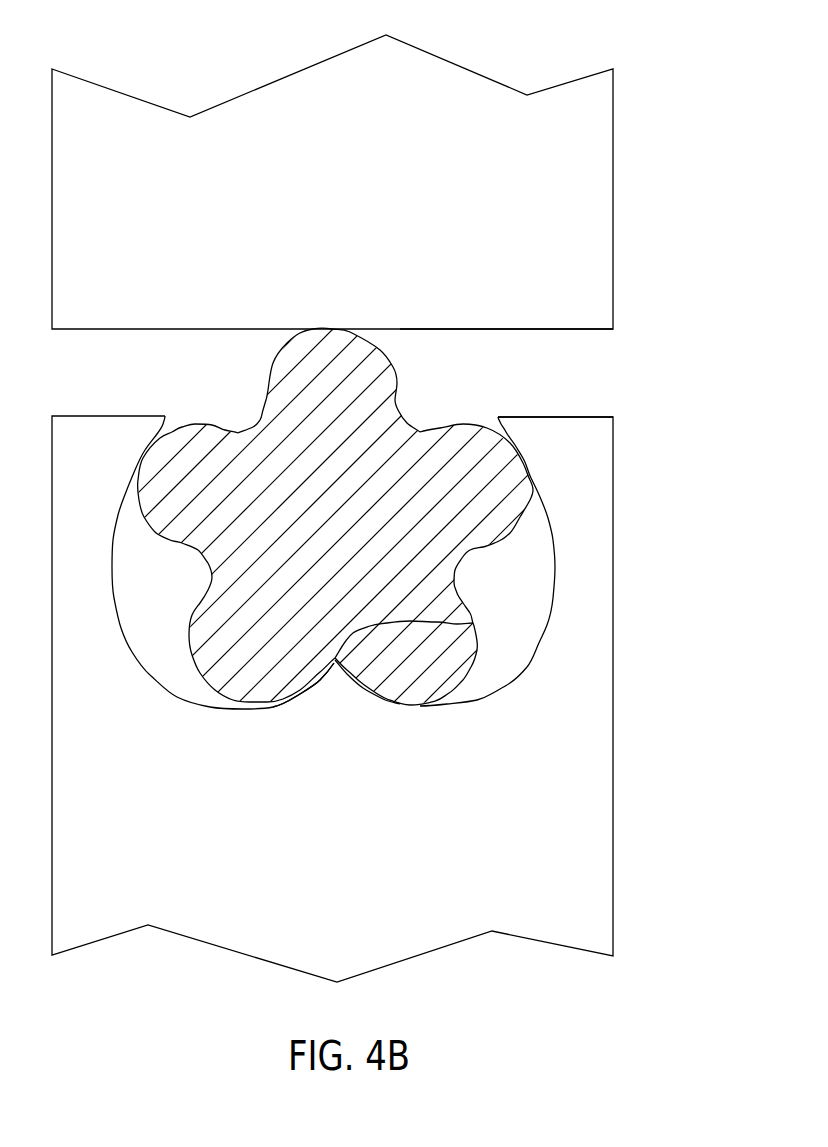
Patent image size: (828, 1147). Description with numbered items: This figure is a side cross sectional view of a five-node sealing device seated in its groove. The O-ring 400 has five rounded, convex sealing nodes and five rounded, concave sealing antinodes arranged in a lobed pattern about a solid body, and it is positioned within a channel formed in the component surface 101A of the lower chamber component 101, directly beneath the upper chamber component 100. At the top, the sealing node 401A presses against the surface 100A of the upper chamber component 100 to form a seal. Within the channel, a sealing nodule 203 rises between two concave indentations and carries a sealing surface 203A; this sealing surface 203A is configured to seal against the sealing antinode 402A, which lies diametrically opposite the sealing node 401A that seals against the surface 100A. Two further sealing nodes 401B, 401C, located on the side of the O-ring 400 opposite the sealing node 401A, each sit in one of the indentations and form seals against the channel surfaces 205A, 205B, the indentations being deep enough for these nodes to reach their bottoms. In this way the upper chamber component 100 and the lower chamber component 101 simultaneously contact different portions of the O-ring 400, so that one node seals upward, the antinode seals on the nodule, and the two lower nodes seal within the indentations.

The upper chamber component 100 is at (270, 182).
The surface of the upper chamber component 100A is at (565, 329).
The lower chamber component 101 is at (347, 899).
The component surface 101A is at (563, 417).
The sealing nodule 203 is at (337, 684).
The sealing surface 203A is at (318, 695).
The surface of the channel 205A is at (150, 677).
The surface of the channel 205B is at (488, 717).
The O-ring 400 is at (347, 488).
The sealing node 401A is at (334, 318).
The sealing node 401B is at (208, 693).
The sealing node 401C is at (477, 652).
The sealing antinode 402A is at (473, 620).